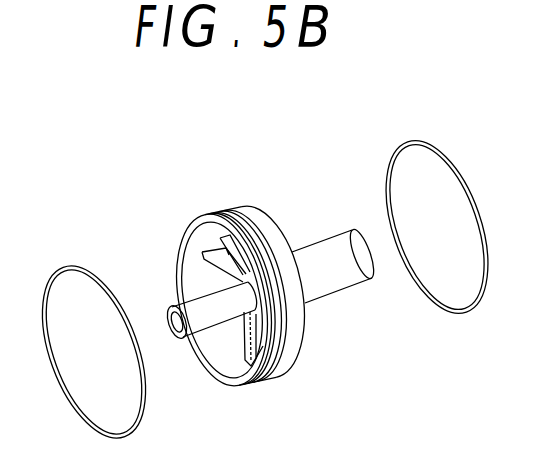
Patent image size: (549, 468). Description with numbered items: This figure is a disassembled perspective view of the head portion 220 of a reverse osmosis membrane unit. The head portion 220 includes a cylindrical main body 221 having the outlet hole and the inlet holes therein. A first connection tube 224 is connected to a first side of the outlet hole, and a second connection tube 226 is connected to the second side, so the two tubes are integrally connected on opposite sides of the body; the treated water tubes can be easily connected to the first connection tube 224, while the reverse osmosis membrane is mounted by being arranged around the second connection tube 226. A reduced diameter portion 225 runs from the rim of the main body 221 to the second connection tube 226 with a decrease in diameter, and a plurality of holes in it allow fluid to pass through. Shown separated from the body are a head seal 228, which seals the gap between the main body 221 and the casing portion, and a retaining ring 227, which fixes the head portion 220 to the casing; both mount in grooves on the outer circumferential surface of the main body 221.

The head portion 220 is at (256, 278).
The main body 221 is at (283, 380).
The first connection tube 224 is at (200, 307).
The reduced diameter portion 225 is at (307, 350).
The second connection tube 226 is at (332, 277).
The retaining ring 227 is at (65, 271).
The head seal 228 is at (403, 142).